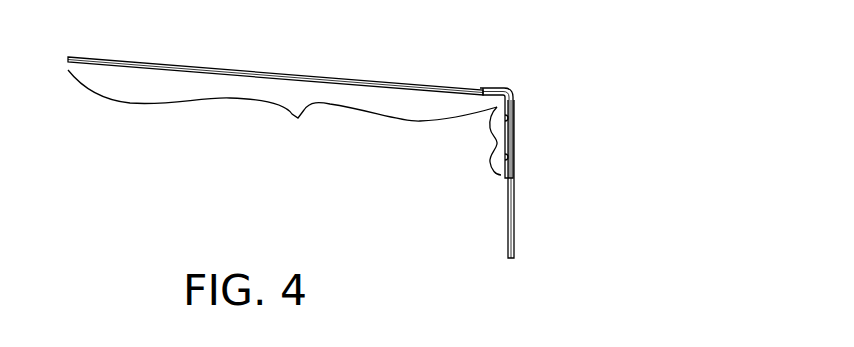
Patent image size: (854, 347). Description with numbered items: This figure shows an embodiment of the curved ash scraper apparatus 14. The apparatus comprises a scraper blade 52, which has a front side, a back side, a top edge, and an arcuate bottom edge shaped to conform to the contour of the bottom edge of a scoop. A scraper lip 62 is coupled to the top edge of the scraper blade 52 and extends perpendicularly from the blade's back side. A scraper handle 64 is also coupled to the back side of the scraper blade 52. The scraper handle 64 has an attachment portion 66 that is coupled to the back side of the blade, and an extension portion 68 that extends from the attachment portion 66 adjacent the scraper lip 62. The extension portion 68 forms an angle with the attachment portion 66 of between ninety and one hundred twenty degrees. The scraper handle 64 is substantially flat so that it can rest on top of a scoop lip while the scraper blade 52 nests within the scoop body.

The curved ash scraper apparatus 14 is at (636, 165).
The scraper blade 52 is at (514, 215).
The scraper lip 62 is at (495, 89).
The scraper handle 64 is at (342, 80).
The attachment portion 66 is at (492, 139).
The extension portion 68 is at (282, 115).